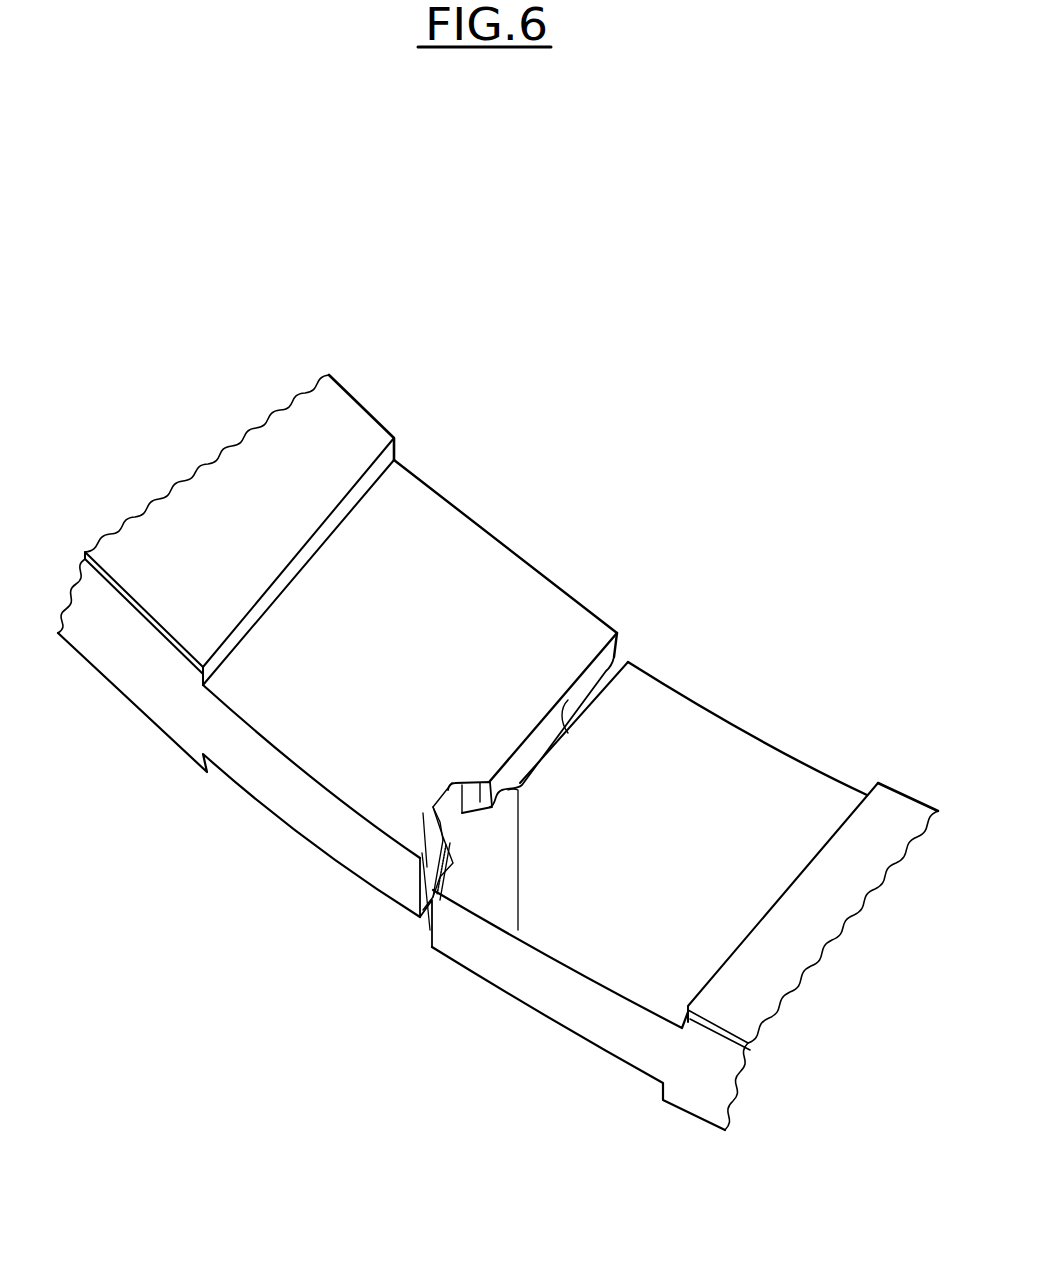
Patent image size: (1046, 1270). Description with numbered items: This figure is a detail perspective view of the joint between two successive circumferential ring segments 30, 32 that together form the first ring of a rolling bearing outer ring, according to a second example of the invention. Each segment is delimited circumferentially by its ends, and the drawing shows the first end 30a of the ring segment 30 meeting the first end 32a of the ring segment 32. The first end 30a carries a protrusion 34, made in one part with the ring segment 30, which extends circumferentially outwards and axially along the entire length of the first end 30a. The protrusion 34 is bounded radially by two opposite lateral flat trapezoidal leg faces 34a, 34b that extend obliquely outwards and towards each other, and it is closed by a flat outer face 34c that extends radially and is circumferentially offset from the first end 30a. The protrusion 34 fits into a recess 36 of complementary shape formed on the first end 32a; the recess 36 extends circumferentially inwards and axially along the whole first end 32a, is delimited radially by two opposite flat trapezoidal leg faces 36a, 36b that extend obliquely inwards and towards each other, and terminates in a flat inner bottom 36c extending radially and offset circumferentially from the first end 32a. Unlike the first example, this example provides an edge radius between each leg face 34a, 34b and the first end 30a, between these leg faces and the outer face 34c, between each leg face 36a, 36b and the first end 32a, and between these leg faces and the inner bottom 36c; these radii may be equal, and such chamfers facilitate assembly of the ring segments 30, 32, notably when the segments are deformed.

The ring segment 30 is at (784, 773).
The first end 30a is at (568, 700).
The ring segment 32 is at (455, 535).
The first end 32a is at (605, 660).
The protrusion 34 is at (468, 835).
The flat trapezoidal leg face 34a is at (430, 930).
The flat trapezoidal leg face 34b is at (518, 930).
The outer face 34c is at (427, 867).
The recess 36 is at (462, 785).
The flat trapezoidal leg face 36a is at (492, 780).
The flat trapezoidal leg face 36b is at (433, 807).
The inner bottom 36c is at (435, 803).